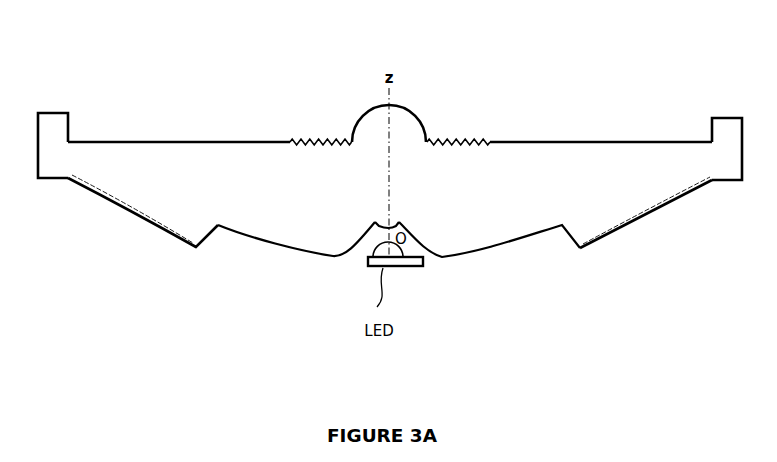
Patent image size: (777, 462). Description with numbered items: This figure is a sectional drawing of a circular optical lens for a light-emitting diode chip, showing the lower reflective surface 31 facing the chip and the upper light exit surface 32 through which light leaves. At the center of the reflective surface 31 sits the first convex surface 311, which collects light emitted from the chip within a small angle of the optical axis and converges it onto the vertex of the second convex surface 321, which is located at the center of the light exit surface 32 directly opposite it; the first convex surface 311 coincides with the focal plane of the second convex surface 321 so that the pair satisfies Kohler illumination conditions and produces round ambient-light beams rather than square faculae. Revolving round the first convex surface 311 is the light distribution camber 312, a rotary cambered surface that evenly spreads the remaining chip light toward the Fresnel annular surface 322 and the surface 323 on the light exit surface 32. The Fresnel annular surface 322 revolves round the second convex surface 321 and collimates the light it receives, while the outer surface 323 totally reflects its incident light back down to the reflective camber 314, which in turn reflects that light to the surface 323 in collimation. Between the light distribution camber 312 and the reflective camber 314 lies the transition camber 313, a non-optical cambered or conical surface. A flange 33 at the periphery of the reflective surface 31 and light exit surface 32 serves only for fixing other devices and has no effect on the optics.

The reflective surface 31 is at (390, 283).
The first convex surface 311 is at (383, 222).
The light distribution camber 312 is at (357, 242).
The transition camber 313 is at (501, 248).
The reflective camber 314 is at (647, 222).
The light exit surface 32 is at (390, 85).
The second convex surface 321 is at (367, 120).
The Fresnel annular surface 322 is at (470, 139).
The surface 323 is at (572, 139).
The flange 33 is at (723, 130).